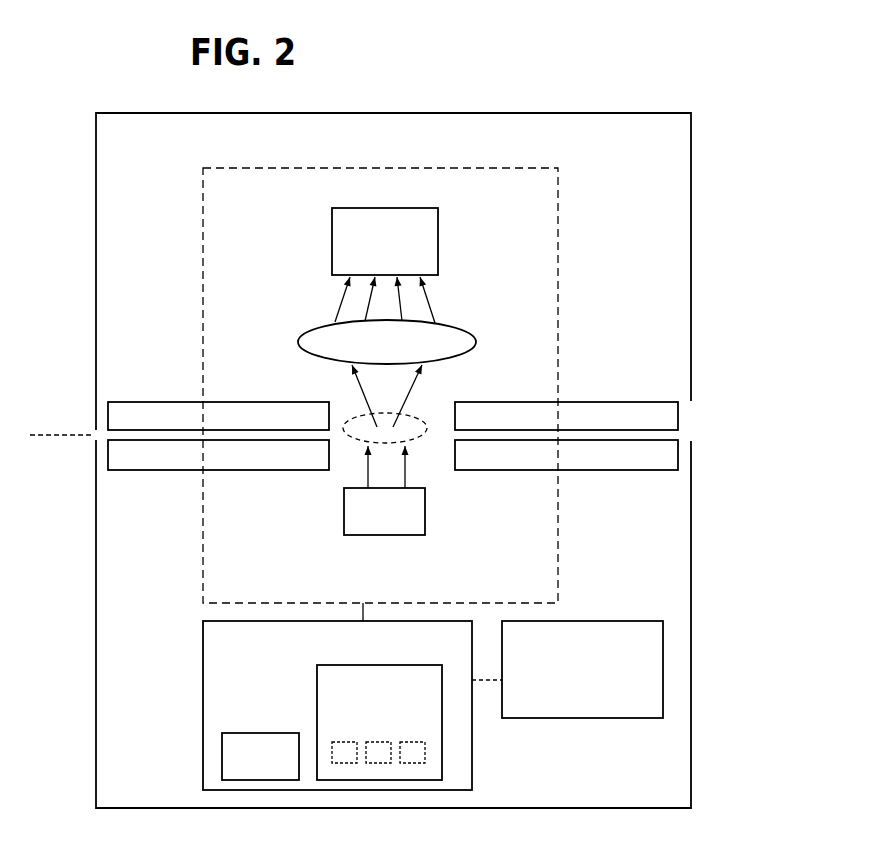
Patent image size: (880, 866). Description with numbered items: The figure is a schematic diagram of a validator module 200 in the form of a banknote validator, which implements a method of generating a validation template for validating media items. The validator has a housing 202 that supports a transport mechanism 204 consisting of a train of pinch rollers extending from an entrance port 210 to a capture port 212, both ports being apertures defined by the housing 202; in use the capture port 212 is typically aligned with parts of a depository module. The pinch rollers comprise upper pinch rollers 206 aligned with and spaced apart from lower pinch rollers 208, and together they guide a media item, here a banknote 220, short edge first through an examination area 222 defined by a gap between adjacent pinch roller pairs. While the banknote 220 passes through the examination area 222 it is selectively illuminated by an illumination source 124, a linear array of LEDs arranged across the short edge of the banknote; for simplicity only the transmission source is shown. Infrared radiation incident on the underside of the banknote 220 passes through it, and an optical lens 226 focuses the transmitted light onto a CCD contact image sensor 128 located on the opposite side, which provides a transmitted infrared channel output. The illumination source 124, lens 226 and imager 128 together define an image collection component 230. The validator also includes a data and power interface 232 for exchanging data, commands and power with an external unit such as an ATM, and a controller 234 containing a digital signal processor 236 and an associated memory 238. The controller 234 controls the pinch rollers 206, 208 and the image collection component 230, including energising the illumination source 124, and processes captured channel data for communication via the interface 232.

The validator module 200 is at (612, 48).
The housing 202 is at (692, 155).
The transport mechanism 204 is at (593, 494).
The upper pinch rollers 206 is at (163, 401).
The lower pinch rollers 208 is at (162, 460).
The entrance port 210 is at (96, 430).
The capture port 212 is at (691, 433).
The media item 220 is at (44, 437).
The examination area 222 is at (400, 416).
The optical lens 226 is at (404, 354).
The CCD Contact Image Sensor 128 is at (402, 252).
The illumination source 124 is at (343, 510).
The image collection component 230 is at (558, 558).
The data and power interface 232 is at (663, 670).
The controller 234 is at (203, 667).
The Digital Signal Processor 236 is at (222, 755).
The memory 238 is at (443, 755).